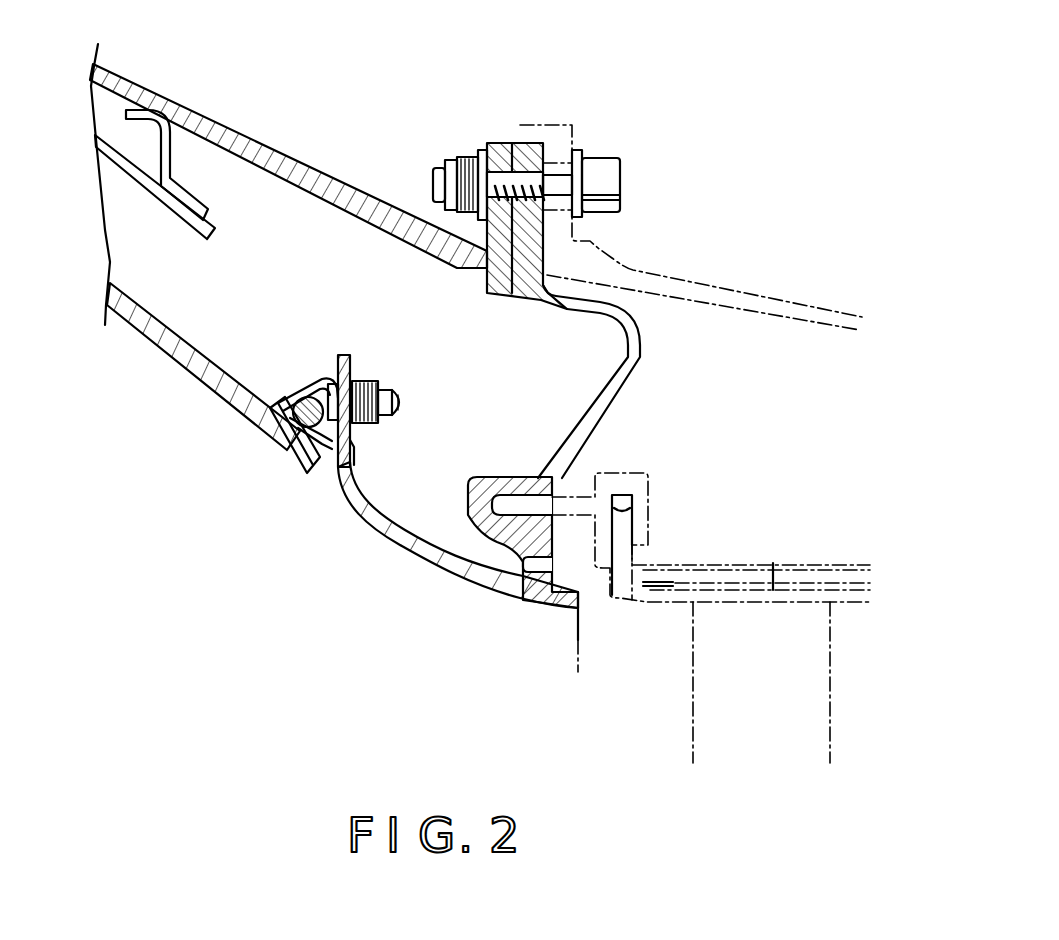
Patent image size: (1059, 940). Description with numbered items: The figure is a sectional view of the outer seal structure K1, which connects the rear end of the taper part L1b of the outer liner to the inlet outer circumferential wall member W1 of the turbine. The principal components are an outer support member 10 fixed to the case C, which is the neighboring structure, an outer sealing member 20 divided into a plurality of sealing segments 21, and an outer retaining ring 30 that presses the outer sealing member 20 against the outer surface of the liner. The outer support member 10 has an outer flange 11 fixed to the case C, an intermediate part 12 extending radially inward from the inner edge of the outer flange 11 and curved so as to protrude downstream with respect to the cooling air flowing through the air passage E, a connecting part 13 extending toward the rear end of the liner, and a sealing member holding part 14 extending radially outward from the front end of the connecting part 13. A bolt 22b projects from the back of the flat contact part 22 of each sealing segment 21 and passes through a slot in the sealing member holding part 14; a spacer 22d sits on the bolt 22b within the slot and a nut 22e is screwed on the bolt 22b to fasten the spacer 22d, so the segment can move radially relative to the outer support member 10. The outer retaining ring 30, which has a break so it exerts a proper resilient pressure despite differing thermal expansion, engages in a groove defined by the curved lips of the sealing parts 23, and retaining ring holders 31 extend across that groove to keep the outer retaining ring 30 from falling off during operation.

The outer support member 10 is at (510, 603).
The outer flange 11 is at (533, 143).
The intermediate part 12 is at (620, 398).
The connecting part 13 is at (453, 583).
The sealing member holding part 14 is at (343, 350).
The outer sealing member 20 is at (273, 388).
The sealing segment 21 is at (323, 468).
The flat contact part 22 is at (439, 462).
The bolt 22b is at (398, 392).
The spacer 22d is at (355, 447).
The nut 22e is at (373, 378).
The sealing part 23 is at (280, 408).
The outer retaining ring 30 is at (302, 424).
The retaining ring holder 31 is at (313, 380).
The case C is at (324, 178).
The air passage E is at (210, 187).
The taper part L1b is at (177, 330).
The inlet outer circumferential wall member W1 is at (648, 603).
The outer seal structure K1 is at (815, 68).